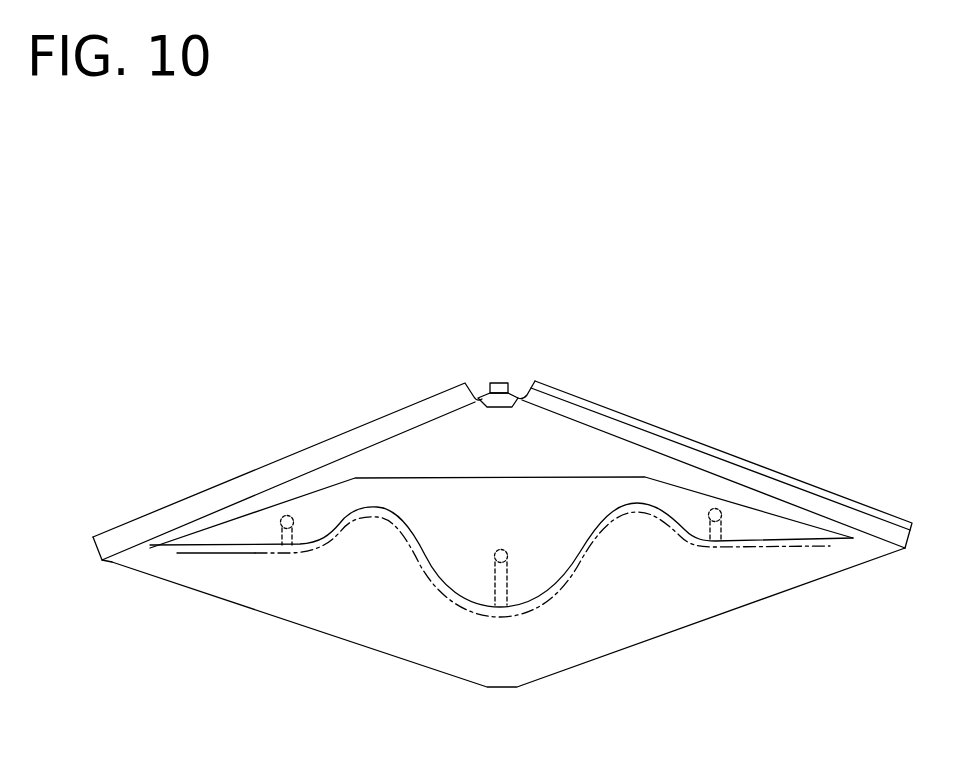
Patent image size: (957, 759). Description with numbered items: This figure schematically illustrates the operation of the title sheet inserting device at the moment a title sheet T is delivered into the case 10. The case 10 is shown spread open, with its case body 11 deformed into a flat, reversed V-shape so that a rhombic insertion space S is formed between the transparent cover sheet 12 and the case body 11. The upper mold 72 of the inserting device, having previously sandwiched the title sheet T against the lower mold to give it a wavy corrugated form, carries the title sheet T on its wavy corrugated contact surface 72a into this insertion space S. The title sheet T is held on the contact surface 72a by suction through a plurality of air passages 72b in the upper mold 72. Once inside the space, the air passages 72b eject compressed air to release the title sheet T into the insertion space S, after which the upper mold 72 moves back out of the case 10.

The case 10 is at (502, 430).
The case body 11 is at (432, 403).
The transparent cover sheet 12 is at (508, 648).
The upper mold 72 is at (508, 490).
The contact surface 72a is at (547, 595).
The air passages 72b is at (285, 548).
The title sheet T is at (365, 518).
The insertion space S is at (670, 597).